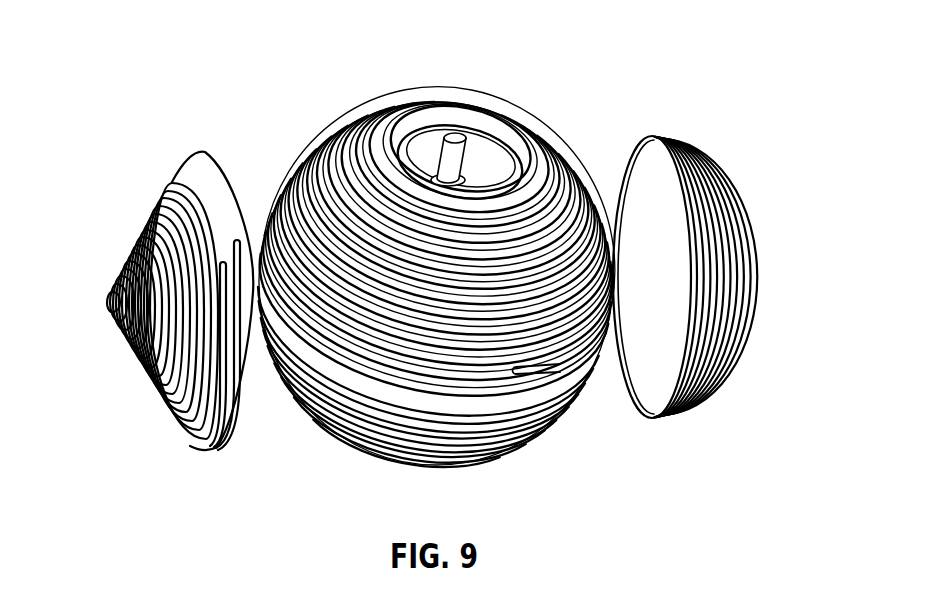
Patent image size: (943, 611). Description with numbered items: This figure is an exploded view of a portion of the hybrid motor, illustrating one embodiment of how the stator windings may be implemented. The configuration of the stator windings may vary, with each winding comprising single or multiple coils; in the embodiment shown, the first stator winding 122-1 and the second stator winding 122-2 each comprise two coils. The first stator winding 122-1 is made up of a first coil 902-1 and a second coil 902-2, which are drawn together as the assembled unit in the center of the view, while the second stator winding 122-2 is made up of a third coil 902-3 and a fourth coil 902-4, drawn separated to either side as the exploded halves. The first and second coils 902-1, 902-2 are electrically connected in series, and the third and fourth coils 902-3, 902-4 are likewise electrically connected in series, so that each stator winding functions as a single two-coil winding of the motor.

The first stator winding 122-1 is at (429, 265).
The second stator winding 122-2 is at (444, 264).
The first coil 902-1 is at (320, 152).
The second coil 902-2 is at (510, 440).
The third coil 902-3 is at (145, 212).
The fourth coil 902-4 is at (738, 208).